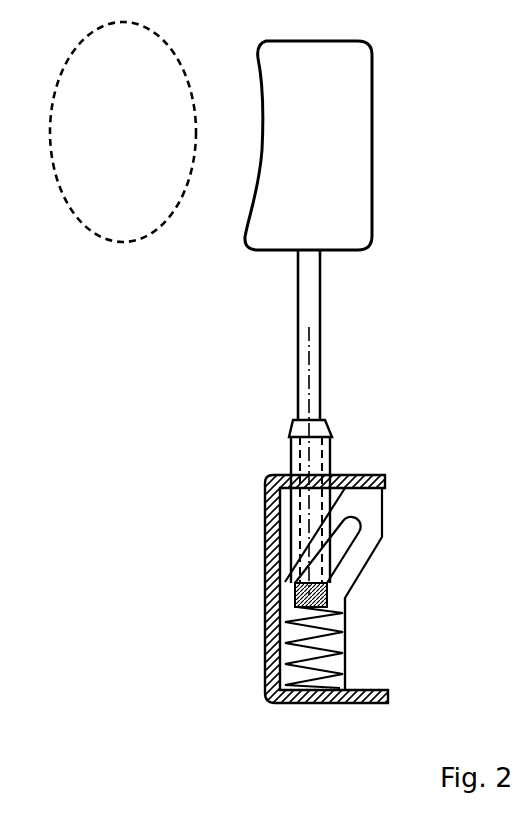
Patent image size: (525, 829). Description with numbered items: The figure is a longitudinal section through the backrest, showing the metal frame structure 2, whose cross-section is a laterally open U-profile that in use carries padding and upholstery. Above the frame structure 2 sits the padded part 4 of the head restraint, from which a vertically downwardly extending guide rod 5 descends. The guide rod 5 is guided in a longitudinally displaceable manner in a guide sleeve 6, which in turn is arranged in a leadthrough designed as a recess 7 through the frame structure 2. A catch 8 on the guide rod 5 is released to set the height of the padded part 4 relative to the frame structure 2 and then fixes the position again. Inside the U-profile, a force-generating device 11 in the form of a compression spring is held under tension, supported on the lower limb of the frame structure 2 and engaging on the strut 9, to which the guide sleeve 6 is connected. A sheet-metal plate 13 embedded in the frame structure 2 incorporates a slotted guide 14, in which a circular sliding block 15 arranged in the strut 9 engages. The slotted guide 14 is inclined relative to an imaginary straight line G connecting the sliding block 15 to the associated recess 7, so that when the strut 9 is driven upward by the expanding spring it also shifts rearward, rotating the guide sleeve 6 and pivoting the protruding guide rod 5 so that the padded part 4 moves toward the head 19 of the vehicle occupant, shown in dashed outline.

The frame structure 2 is at (325, 703).
The padded part 4 is at (308, 145).
The guide rod 5 is at (308, 288).
The guide sleeve 6 is at (292, 452).
The recess 7 is at (291, 471).
The catch 8 is at (332, 420).
The strut 9 is at (347, 602).
The force-generating device 11 is at (337, 663).
The sheet-metal plate 13 is at (355, 497).
The slotted guide 14 is at (348, 545).
The sliding block 15 is at (330, 588).
The head 19 is at (123, 132).
The imaginary straight line G is at (310, 332).